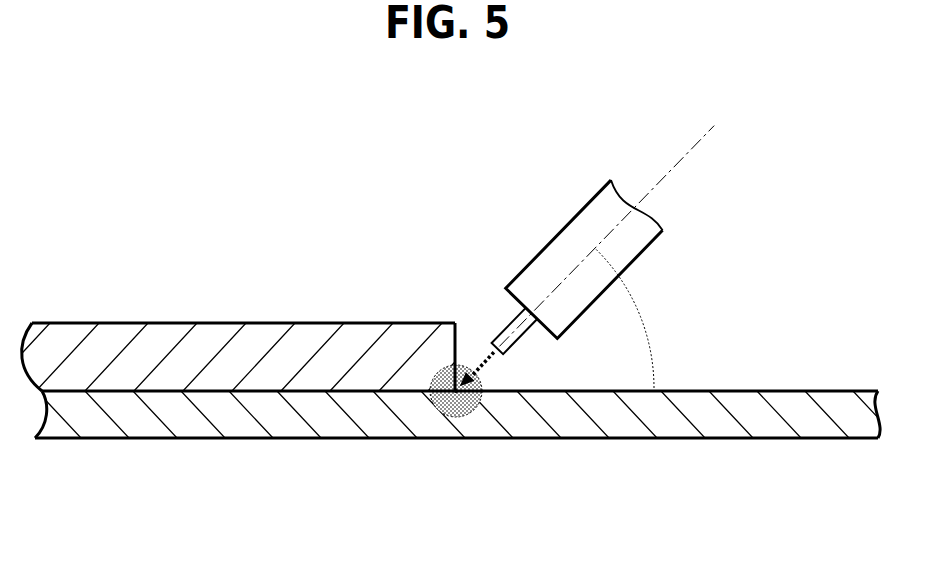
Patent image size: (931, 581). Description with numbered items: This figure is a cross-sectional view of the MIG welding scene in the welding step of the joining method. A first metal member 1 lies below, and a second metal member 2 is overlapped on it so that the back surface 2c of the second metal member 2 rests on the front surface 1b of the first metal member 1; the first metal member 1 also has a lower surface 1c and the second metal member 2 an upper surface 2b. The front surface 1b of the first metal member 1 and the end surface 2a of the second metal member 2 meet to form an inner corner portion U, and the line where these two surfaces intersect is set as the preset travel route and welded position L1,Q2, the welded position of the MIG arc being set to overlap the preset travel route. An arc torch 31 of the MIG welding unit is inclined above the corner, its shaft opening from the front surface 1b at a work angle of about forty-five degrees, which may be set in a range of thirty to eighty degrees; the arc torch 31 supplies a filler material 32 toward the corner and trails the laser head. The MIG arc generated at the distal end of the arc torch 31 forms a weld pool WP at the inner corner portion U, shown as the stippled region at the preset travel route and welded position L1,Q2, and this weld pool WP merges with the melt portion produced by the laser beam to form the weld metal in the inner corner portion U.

The first metal member 1 is at (823, 402).
The front surface of the first metal member 1b is at (727, 391).
The lower surface of first plate 1c is at (665, 439).
The second metal member 2 is at (127, 342).
The end surface of the second metal member 2a is at (459, 343).
The upper surface of second plate 2b is at (225, 322).
The back surface of the second metal member 2c is at (200, 393).
The arc torch 31 is at (568, 238).
The filler material 32 is at (527, 340).
The inner corner portion U is at (478, 340).
The weld pool WP is at (432, 393).
The preset travel route and welded position L1,Q2 is at (449, 417).